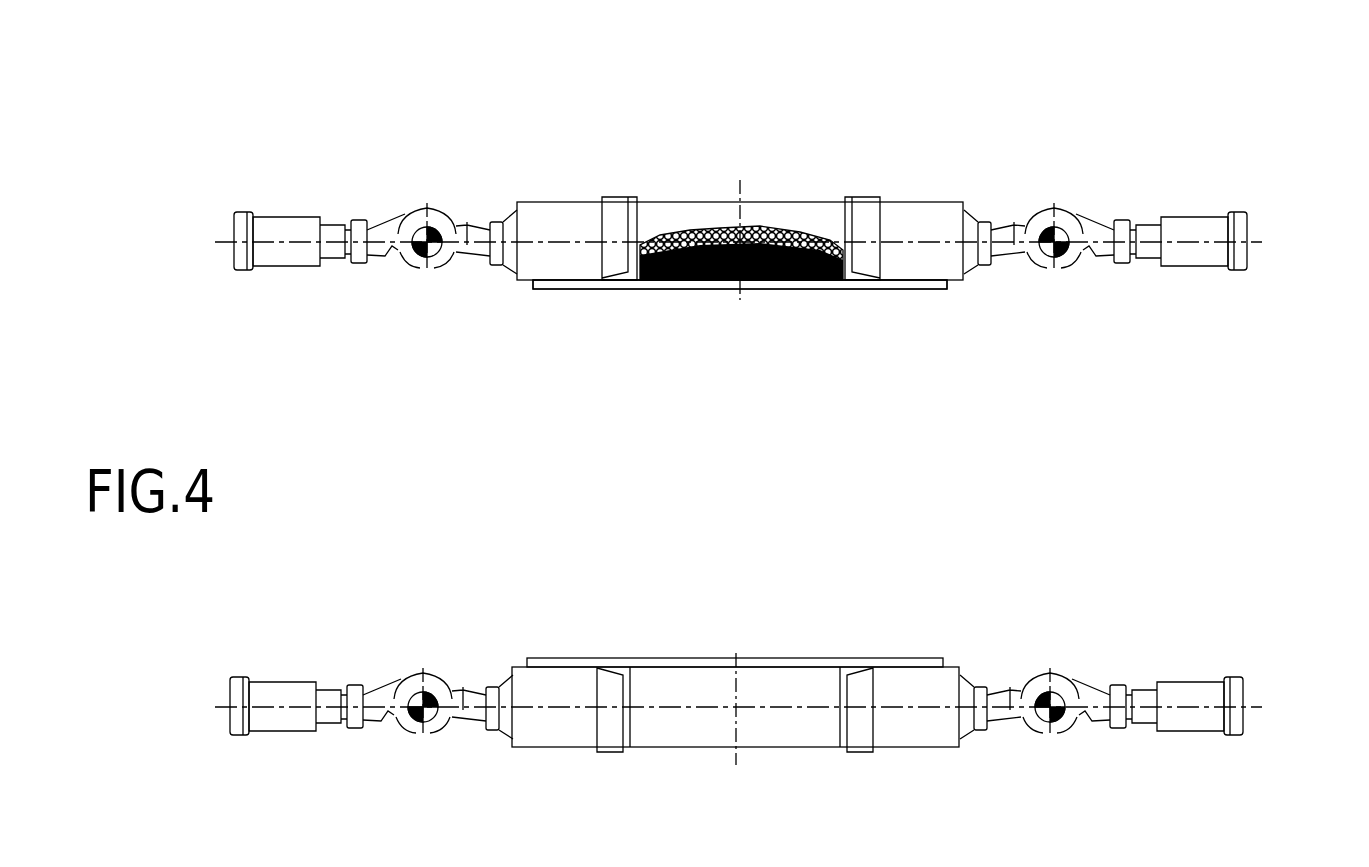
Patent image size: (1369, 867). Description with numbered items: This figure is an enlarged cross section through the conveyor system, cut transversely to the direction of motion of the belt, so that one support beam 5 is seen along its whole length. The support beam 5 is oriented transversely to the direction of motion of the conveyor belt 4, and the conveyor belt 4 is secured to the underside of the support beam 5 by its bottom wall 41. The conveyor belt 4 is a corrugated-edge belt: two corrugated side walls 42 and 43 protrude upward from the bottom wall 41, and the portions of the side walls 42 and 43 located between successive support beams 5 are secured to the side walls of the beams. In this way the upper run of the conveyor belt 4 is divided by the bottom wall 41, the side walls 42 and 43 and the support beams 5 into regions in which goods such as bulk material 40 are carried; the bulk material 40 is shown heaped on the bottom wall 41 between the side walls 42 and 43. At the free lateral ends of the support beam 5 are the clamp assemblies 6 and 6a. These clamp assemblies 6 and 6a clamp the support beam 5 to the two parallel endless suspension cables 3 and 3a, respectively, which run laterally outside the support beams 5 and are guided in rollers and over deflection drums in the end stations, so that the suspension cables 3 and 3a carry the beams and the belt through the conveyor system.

The suspension cable 3 is at (1058, 257).
The suspension cable 3a is at (421, 260).
The conveyor belt 4 is at (617, 287).
The support beam 5 is at (812, 212).
The clamp assembly 6 is at (1233, 257).
The clamp assembly 6a is at (250, 262).
The bulk material 40 is at (700, 232).
The bottom wall 41 is at (765, 283).
The corrugated side wall 42 is at (850, 220).
The corrugated side wall 43 is at (633, 235).